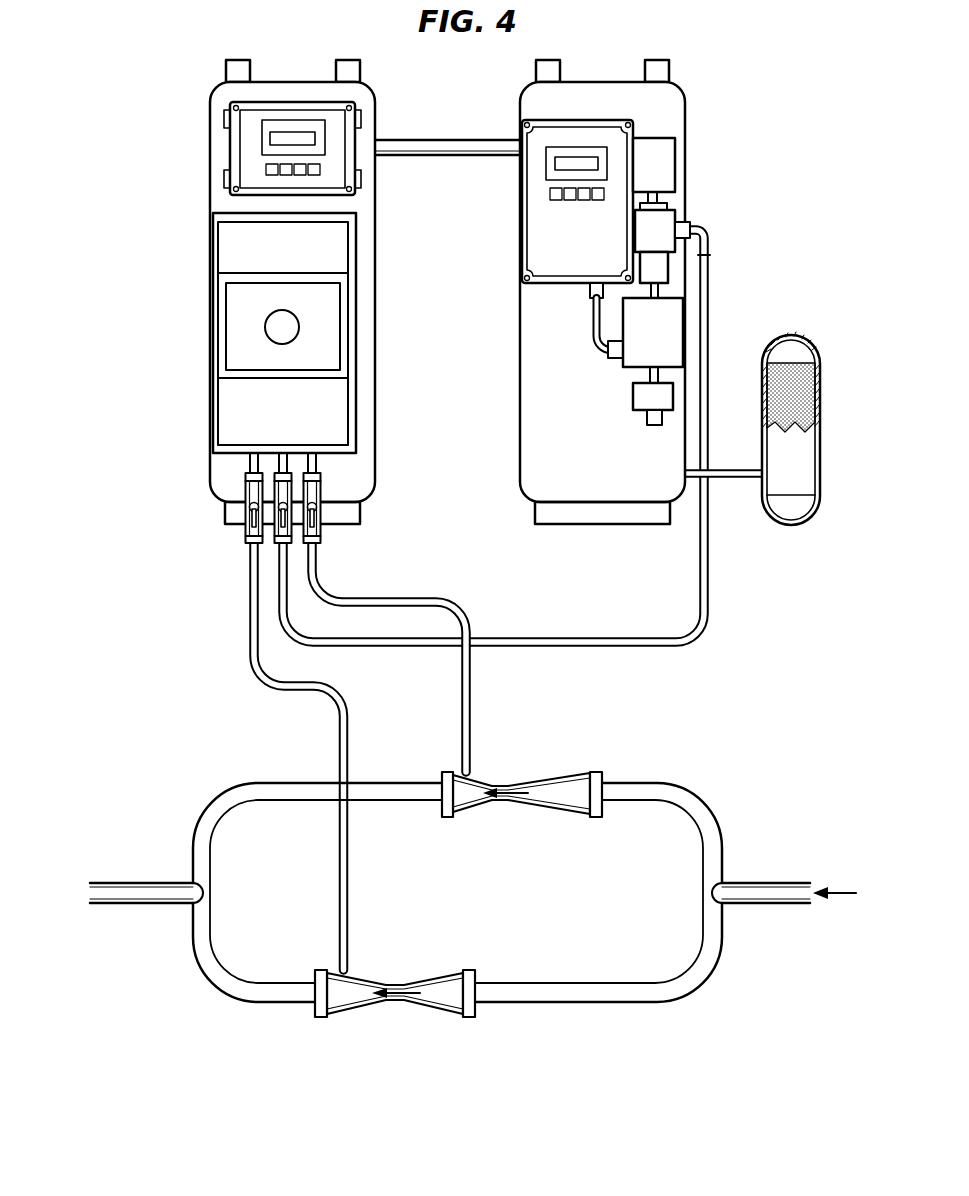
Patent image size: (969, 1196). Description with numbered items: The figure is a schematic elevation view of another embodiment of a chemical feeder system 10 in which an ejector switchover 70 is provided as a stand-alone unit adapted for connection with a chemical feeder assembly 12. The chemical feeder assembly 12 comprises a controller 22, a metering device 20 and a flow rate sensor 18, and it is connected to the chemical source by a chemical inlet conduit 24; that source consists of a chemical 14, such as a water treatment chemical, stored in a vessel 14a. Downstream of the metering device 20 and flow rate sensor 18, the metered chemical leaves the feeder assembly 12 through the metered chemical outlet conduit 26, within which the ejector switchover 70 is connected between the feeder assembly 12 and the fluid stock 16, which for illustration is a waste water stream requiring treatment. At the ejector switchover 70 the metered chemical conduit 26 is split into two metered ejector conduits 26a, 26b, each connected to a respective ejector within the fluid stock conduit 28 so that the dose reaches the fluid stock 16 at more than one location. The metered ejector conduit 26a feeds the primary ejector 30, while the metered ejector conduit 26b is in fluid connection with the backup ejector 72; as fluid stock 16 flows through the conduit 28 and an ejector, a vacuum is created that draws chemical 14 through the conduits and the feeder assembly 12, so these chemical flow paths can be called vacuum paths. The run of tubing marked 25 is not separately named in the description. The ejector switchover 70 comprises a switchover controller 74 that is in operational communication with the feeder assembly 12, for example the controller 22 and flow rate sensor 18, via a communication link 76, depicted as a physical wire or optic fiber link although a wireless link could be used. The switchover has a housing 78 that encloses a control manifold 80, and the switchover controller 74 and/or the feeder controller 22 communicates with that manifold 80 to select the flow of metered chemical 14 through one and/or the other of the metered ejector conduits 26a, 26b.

The chemical feeder system 10 is at (170, 104).
The chemical feeder assembly 12 is at (707, 125).
The chemical 14 is at (800, 397).
The vessel 14a is at (805, 463).
The fluid stock 16 is at (838, 893).
The flow rate sensor 18 is at (670, 320).
The metering device 20 is at (663, 218).
The controller 22 is at (545, 228).
The chemical inlet conduit 24 is at (730, 480).
The feed line assembly 25 is at (710, 655).
The metered chemical outlet conduit 26 is at (578, 640).
The metered ejector conduit 26a is at (470, 706).
The metered ejector conduit 26b is at (250, 606).
The fluid stock conduit 28 is at (775, 905).
The ejector 30 is at (570, 772).
The ejector switchover 70 is at (195, 233).
The backup ejector 72 is at (455, 968).
The switchover controller 74 is at (218, 150).
The communication link 76 is at (442, 138).
The housing 78 is at (233, 405).
The control manifold 80 is at (243, 466).